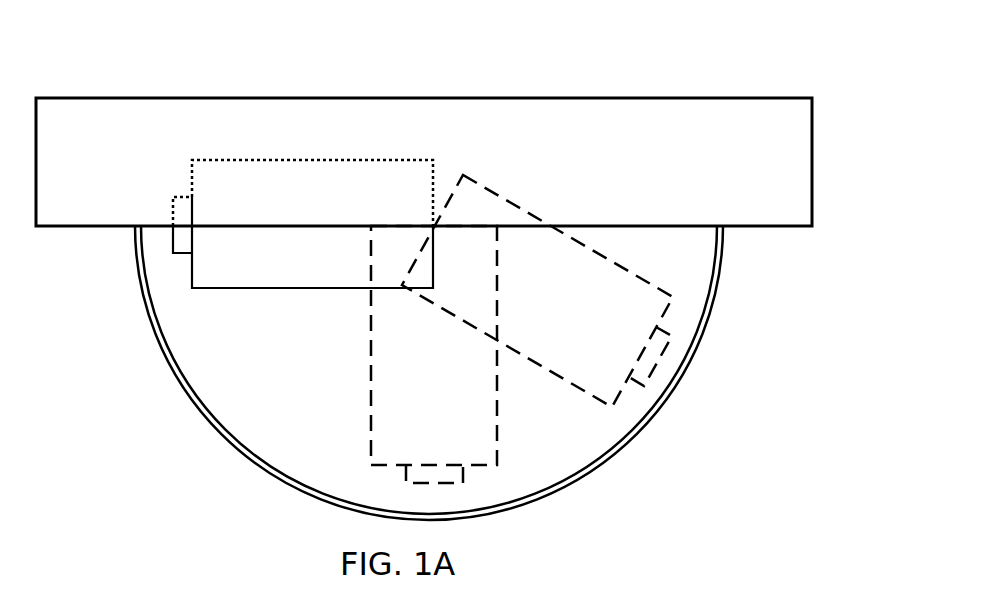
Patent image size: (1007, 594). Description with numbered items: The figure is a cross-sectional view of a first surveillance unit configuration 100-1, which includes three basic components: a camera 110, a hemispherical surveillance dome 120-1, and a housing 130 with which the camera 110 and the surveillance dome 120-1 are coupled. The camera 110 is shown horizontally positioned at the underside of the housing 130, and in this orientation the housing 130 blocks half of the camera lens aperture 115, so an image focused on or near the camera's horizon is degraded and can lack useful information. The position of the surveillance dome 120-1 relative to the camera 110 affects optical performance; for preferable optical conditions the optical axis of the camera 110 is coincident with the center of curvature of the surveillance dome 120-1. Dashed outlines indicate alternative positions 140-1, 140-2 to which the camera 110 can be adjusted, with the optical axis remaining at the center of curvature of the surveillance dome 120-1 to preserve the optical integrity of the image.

The first surveillance unit configuration 100-1 is at (738, 68).
The housing 130 is at (812, 150).
The surveillance dome 120-1 is at (695, 352).
The camera 110 is at (337, 288).
The camera lens aperture 115 is at (173, 258).
The camera position 140-1 is at (368, 362).
The camera position 140-2 is at (592, 398).